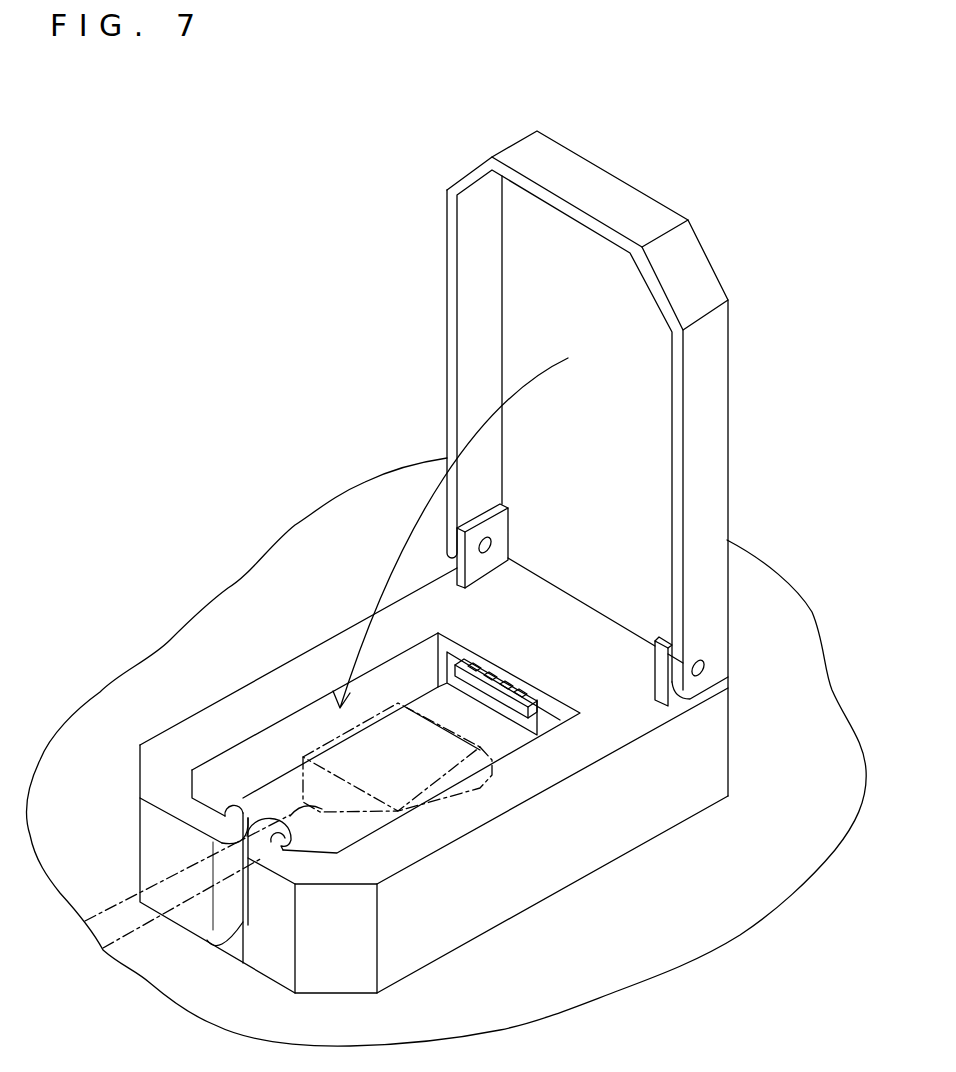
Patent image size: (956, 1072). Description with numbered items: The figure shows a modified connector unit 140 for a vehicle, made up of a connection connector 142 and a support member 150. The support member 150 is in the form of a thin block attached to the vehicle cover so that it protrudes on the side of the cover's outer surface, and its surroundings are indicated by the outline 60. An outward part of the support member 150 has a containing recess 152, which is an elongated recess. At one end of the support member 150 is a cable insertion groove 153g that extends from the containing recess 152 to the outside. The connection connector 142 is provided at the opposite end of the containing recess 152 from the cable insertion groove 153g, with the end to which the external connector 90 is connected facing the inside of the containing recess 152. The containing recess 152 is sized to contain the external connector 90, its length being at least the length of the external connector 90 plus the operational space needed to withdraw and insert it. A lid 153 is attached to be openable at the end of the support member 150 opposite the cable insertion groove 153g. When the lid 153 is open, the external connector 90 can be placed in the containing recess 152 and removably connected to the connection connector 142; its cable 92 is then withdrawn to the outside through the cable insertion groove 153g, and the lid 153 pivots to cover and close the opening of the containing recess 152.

The housing 60 is at (817, 660).
The external connector 90 is at (452, 790).
The cable 92 is at (163, 880).
The connector unit 140 is at (622, 432).
The connection connector 142 is at (476, 668).
The support member 150 is at (434, 788).
The containing recess 152 is at (268, 740).
The lid 153 is at (713, 453).
The cable insertion groove 153g is at (237, 942).